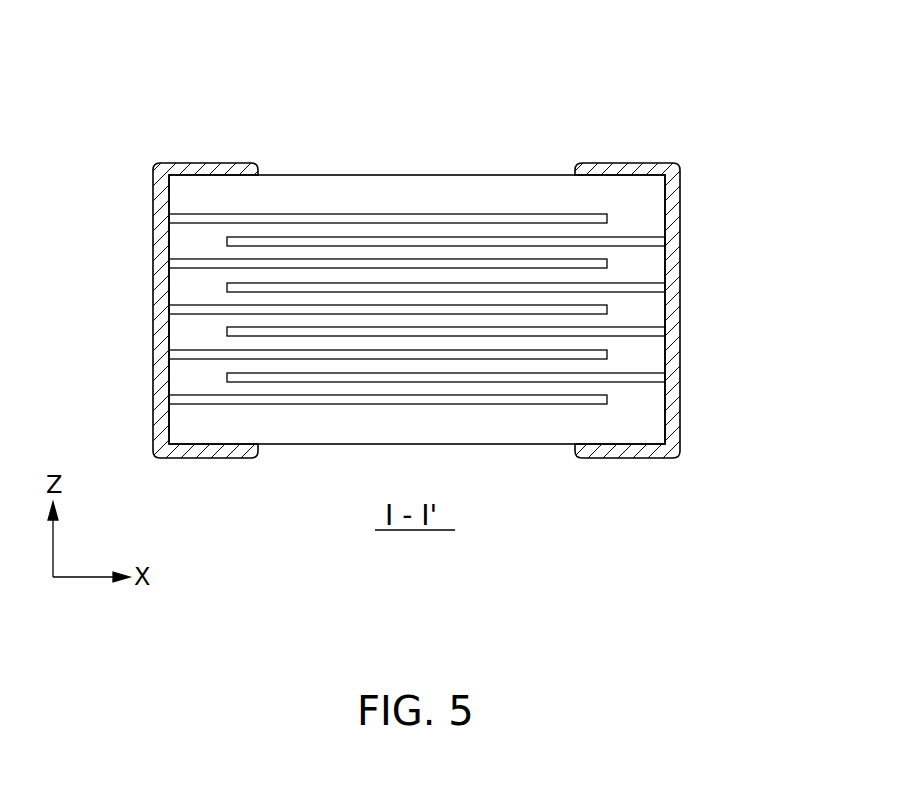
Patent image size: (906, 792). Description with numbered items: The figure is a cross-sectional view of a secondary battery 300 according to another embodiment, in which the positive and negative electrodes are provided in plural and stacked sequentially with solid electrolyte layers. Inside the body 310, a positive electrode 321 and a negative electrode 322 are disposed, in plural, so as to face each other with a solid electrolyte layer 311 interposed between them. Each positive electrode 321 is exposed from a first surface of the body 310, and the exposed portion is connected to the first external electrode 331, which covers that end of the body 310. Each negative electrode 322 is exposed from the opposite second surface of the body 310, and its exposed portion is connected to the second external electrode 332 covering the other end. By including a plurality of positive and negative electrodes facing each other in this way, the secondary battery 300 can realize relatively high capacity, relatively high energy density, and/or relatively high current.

The multilayer capacitor 300 is at (432, 40).
The body 310 is at (418, 175).
The solid electrolyte layer 311 is at (630, 226).
The positive electrode 321 is at (583, 214).
The negative electrode 322 is at (627, 240).
The first external electrode 331 is at (220, 164).
The second external electrode 332 is at (633, 163).